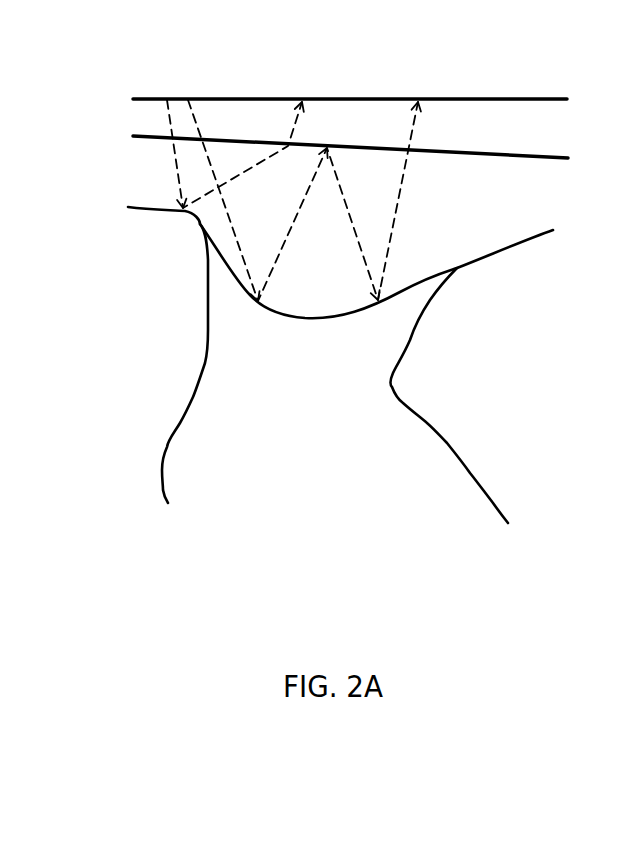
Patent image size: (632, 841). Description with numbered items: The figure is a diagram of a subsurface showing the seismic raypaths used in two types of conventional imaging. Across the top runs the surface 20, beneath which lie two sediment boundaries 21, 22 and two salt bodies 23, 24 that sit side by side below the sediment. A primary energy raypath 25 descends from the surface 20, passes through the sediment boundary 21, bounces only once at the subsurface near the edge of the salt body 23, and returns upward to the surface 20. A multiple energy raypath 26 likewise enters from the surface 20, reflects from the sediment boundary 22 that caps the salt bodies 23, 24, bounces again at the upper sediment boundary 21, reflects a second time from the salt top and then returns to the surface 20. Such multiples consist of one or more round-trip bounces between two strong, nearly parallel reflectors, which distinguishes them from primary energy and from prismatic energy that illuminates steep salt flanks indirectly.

The surface 20 is at (448, 98).
The sediment boundary 21 is at (568, 158).
The sediment boundary 22 is at (428, 285).
The salt body 23 is at (180, 338).
The salt body 24 is at (522, 353).
The primary energy raypath 25 is at (170, 128).
The multiple energy raypath 26 is at (193, 128).